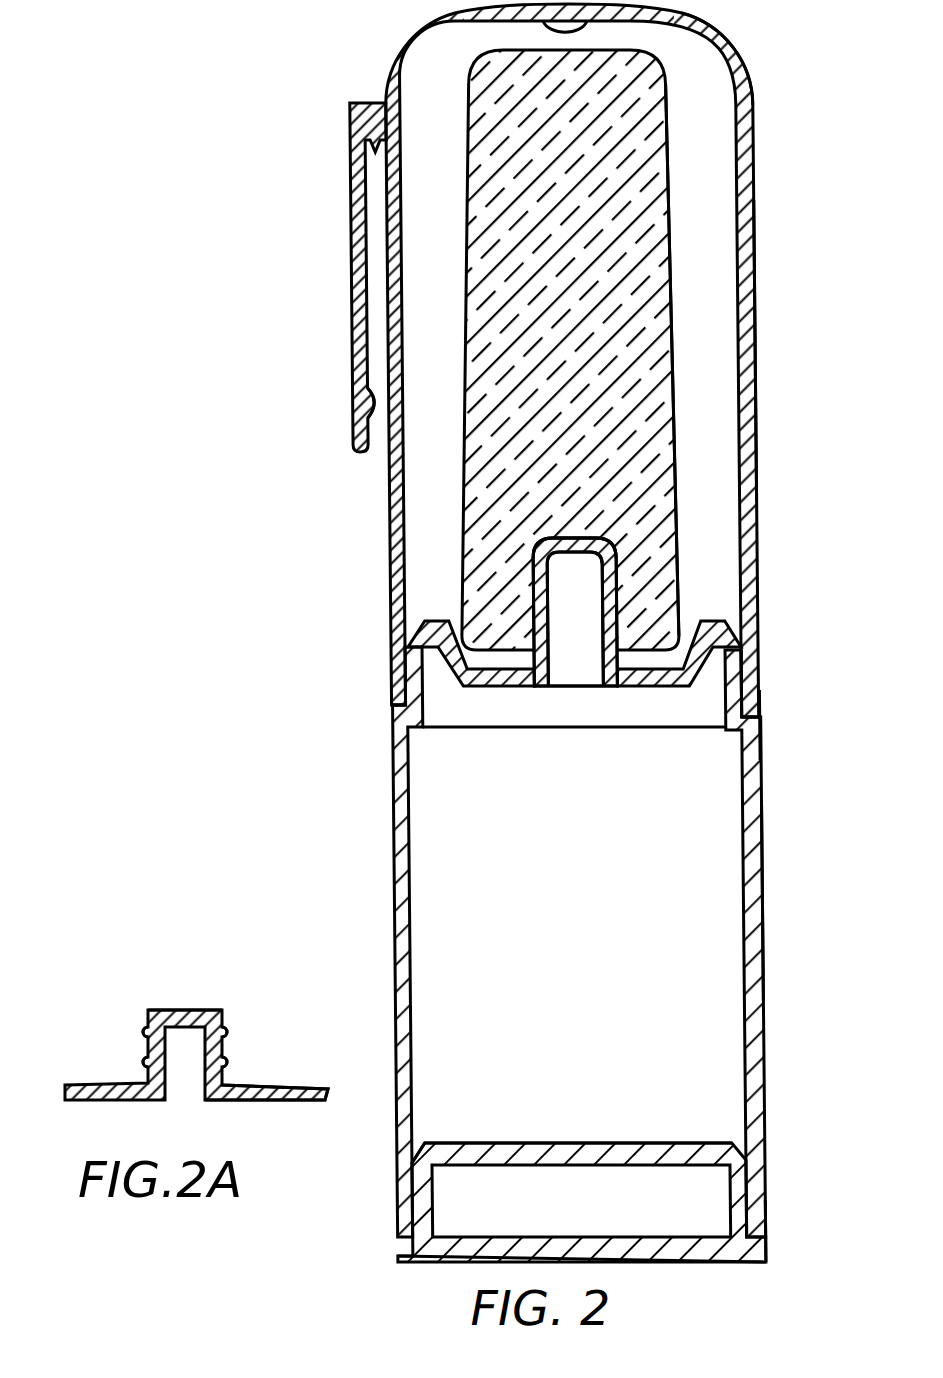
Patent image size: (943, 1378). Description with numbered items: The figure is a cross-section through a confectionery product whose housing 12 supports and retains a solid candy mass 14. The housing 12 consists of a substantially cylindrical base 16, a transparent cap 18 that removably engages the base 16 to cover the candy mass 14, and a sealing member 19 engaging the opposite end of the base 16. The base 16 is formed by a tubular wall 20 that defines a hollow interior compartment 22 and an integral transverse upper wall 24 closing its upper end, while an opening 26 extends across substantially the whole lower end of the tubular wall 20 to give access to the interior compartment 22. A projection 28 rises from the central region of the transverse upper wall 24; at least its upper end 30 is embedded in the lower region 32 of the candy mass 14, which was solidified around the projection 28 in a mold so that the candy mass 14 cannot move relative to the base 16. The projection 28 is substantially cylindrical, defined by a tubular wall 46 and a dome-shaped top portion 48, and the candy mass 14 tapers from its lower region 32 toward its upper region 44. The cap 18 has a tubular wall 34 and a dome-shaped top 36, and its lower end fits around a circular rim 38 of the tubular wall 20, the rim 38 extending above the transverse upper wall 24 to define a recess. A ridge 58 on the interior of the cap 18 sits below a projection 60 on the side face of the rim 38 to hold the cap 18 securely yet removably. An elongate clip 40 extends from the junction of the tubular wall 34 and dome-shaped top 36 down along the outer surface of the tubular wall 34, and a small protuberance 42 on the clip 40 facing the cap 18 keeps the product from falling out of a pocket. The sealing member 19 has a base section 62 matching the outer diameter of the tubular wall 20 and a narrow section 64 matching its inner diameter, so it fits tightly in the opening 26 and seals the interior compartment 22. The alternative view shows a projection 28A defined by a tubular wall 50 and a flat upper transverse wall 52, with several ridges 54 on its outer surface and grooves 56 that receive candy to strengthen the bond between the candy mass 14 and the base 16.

In FIG. 2, the housing 12 is at (762, 697).
In FIG. 2, the solid candy mass 14 is at (652, 450).
In FIG. 2, the base 16 is at (764, 892).
In FIG. 2, the cap 18 is at (758, 505).
In FIG. 2, the sealing member 19 is at (742, 1235).
In FIG. 2, the tubular wall 20 is at (740, 915).
In FIG. 2, the interior compartment 22 is at (598, 913).
In FIG. 2, the transverse upper wall 24 is at (682, 687).
In FIG. 2, the opening 26 is at (476, 1127).
In FIG. 2, the projection 28 is at (617, 660).
In FIG. 2A, the alternative projection 28A is at (152, 1008).
In FIG. 2, the upper end of projection 30 is at (581, 547).
In FIG. 2, the lower region of candy mass 32 is at (661, 545).
In FIG. 2, the tubular wall of cap 34 is at (740, 348).
In FIG. 2, the dome-shaped top 36 is at (729, 58).
In FIG. 2, the rim 38 is at (753, 672).
In FIG. 2, the clip 40 is at (360, 372).
In FIG. 2, the protuberance 42 is at (374, 418).
In FIG. 2, the upper region of candy mass 44 is at (657, 137).
In FIG. 2, the tubular wall of projection 46 is at (547, 661).
In FIG. 2, the dome-shaped top portion 48 is at (575, 555).
In FIG. 2A, the tubular wall of alternative projection 50 is at (200, 1082).
In FIG. 2A, the flat upper transverse wall 52 is at (215, 1008).
In FIG. 2A, the ridges 54 is at (225, 1032).
In FIG. 2A, the grooves 56 is at (145, 1050).
In FIG. 2, the ridge 58 is at (757, 677).
In FIG. 2, the projection on rim 60 is at (410, 656).
In FIG. 2, the base section 62 is at (397, 1232).
In FIG. 2, the narrow section 64 is at (405, 1173).